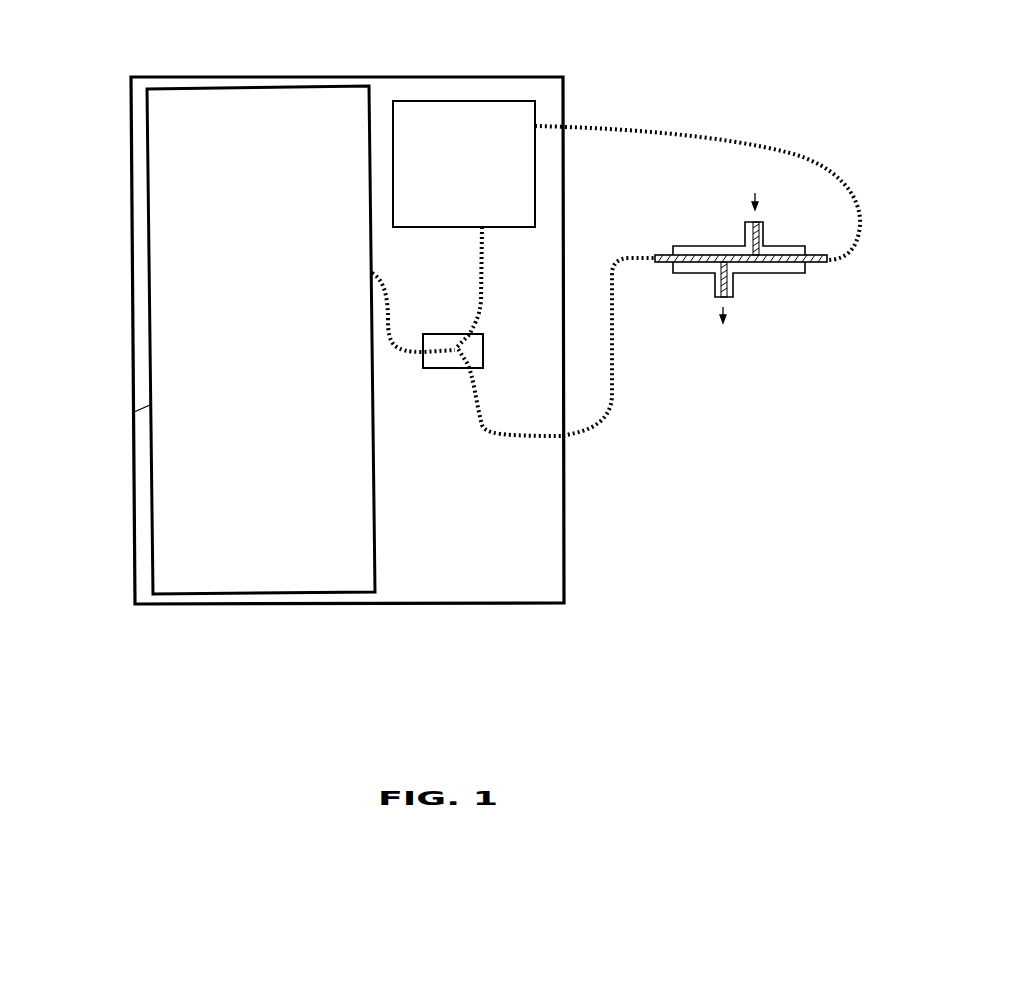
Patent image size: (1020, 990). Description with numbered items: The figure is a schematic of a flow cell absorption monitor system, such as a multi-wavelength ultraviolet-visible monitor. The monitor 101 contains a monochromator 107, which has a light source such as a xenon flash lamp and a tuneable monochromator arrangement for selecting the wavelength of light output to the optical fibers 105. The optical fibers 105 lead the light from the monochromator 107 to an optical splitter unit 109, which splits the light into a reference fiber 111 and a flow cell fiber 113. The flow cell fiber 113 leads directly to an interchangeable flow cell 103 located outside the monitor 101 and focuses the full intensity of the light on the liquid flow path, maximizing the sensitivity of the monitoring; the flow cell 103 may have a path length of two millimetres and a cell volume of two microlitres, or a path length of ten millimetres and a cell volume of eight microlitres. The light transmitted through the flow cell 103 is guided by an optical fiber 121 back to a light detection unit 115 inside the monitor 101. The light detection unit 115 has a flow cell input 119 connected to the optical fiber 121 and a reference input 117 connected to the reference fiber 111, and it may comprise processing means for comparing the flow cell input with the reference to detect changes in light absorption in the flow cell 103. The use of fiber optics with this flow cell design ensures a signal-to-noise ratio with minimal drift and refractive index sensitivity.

The monitor 101 is at (565, 505).
The flow cell 103 is at (722, 234).
The optical fibers 105 is at (383, 285).
The monochromator 107 is at (152, 497).
The optical splitter unit 109 is at (442, 370).
The reference fiber 111 is at (492, 274).
The flow cell fiber 113 is at (622, 414).
The light detection unit 115 is at (480, 101).
The reference input 117 is at (493, 200).
The flow cell input 119 is at (530, 113).
The optical fiber 121 is at (794, 147).